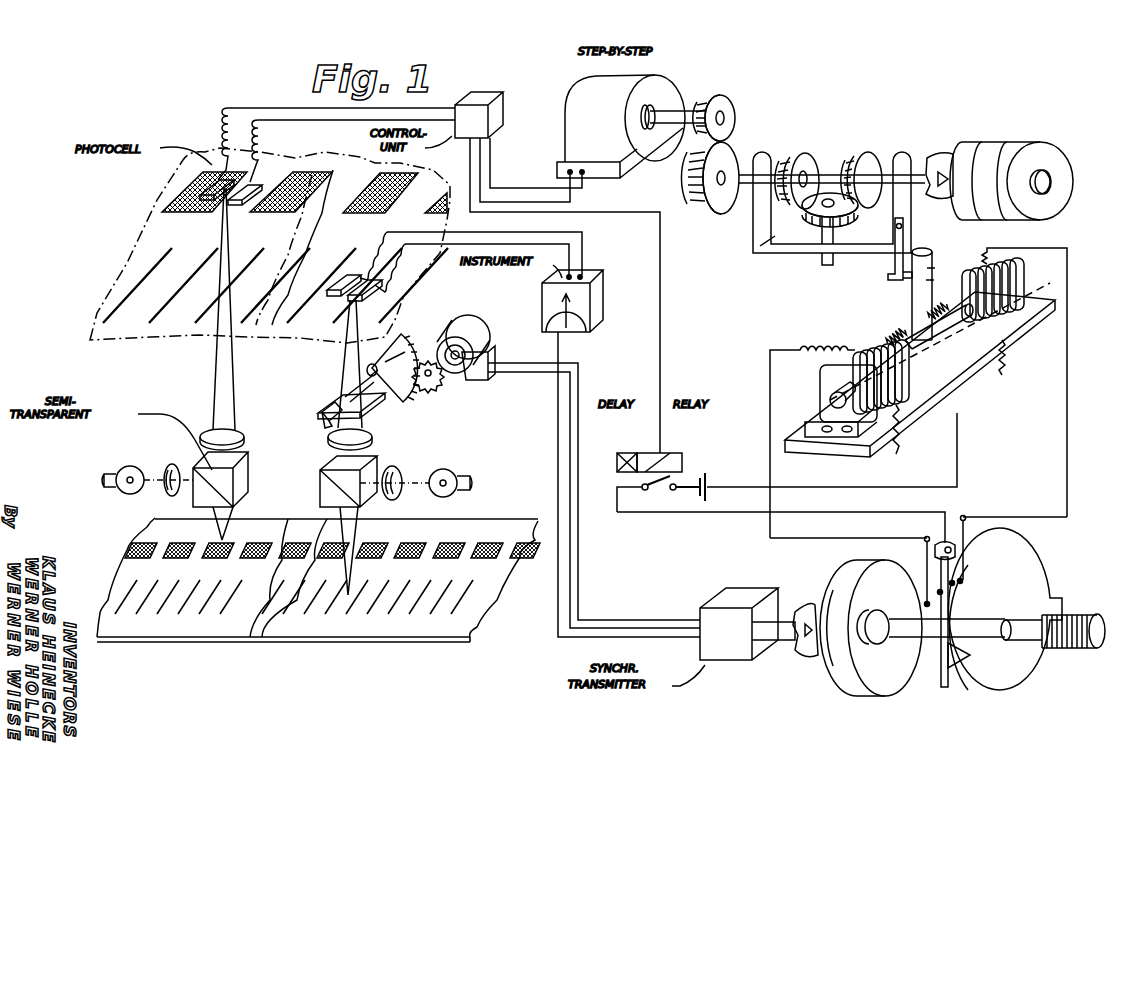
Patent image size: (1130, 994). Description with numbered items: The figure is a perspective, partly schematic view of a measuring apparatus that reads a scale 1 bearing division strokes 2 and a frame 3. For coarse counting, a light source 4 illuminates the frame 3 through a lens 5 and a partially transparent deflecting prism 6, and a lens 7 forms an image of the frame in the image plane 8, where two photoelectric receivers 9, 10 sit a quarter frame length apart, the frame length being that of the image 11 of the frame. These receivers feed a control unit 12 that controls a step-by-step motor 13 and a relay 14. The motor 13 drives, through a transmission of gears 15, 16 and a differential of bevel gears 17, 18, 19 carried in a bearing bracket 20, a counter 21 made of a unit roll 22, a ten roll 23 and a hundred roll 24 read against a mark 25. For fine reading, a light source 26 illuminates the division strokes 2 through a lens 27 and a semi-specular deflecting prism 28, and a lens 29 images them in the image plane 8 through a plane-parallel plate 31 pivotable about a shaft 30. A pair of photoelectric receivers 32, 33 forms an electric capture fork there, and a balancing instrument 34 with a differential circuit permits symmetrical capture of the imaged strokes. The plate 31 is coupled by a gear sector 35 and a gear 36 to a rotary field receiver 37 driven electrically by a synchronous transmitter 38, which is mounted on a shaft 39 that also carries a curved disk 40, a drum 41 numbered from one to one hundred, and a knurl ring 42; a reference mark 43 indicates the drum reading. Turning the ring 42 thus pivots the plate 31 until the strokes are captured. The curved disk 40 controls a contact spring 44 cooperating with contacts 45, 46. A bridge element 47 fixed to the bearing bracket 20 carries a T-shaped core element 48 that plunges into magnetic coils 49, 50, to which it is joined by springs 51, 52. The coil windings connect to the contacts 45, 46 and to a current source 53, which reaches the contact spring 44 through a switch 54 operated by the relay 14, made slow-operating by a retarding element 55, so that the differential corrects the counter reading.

The scale 1 is at (140, 578).
The division strokes 2 is at (312, 608).
The frame 3 is at (310, 555).
The light source 4 is at (130, 466).
The lens 5 is at (176, 472).
The partially transparent deflecting prism 6 is at (245, 473).
The lens 7 is at (215, 434).
The image plane 8 is at (252, 325).
The photoelectric receiver 9 is at (215, 165).
The photoelectric receiver 10 is at (262, 178).
The image of frame 11 is at (308, 172).
The control unit 12 is at (480, 97).
The step-by-step motor 13 is at (587, 104).
The relay 14 is at (672, 452).
The gear 15 is at (735, 110).
The gear 16 is at (690, 182).
The bevel gear 17 is at (798, 165).
The bevel gear 18 is at (827, 192).
The bevel gear 19 is at (868, 158).
The bearing bracket 20 is at (800, 248).
The counter 21 is at (960, 211).
The unit roll 22 is at (1030, 145).
The ten roll 23 is at (1000, 145).
The hundred roll 24 is at (968, 145).
The mark 25 is at (940, 152).
The light source 26 is at (458, 476).
The lens 27 is at (402, 478).
The semi-specular deflecting prism 28 is at (380, 468).
The lens 29 is at (328, 440).
The shaft 30 is at (320, 418).
The plane-parallel plate 31 is at (340, 400).
The photoelectric receiver 32 is at (337, 275).
The photoelectric receiver 33 is at (385, 290).
The balancing instrument 34 is at (540, 305).
The gear sector 35 is at (408, 385).
The gear 36 is at (434, 384).
The rotary field receiver 37 is at (478, 340).
The synchronous transmitter 38 is at (748, 658).
The shaft 39 is at (933, 645).
The curved disk 40 is at (1025, 665).
The drum 41 is at (835, 678).
The knurl ring 42 is at (1068, 625).
The reference mark 43 is at (805, 610).
The contact spring 44 is at (950, 680).
The contact 45 is at (928, 590).
The contact 46 is at (963, 578).
The bridge element 47 is at (895, 266).
The T-shaped core element 48 is at (940, 332).
The magnetic coil 49 is at (822, 382).
The magnetic coil 50 is at (1005, 300).
The spring 51 is at (895, 332).
The spring 52 is at (960, 290).
The current source 53 is at (708, 485).
The switch 54 is at (660, 493).
The retarding element 55 is at (630, 452).